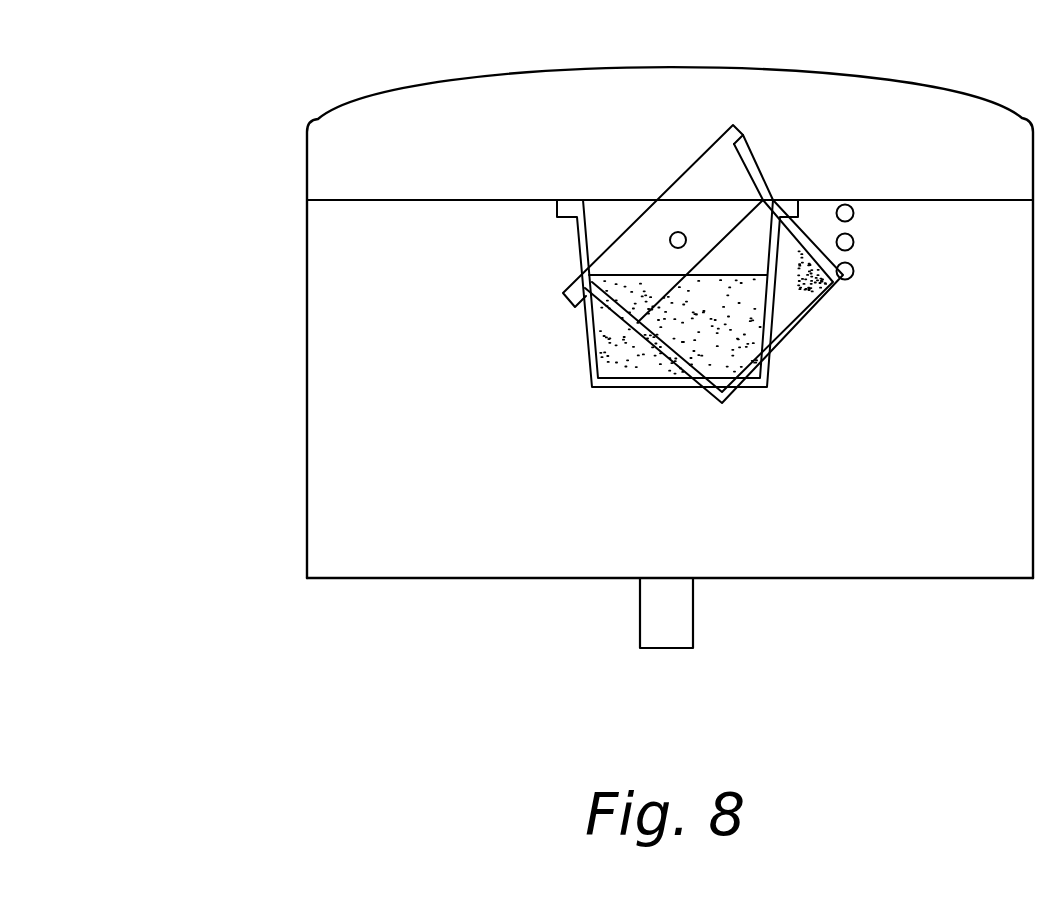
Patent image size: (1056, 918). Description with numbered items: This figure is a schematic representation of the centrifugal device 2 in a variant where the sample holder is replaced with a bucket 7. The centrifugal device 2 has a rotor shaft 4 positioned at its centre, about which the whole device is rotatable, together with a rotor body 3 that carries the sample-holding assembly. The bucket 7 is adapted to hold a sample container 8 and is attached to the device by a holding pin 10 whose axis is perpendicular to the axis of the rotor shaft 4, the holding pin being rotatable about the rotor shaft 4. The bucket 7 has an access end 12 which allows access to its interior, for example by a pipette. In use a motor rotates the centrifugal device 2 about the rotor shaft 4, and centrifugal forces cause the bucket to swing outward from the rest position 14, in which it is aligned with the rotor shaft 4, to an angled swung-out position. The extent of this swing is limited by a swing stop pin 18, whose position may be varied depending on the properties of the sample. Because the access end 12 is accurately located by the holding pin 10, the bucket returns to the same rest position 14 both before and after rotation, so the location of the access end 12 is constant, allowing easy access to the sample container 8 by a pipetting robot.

The centrifugal device 2 is at (265, 300).
The rotor body 3 is at (418, 578).
The rotor shaft 4 is at (668, 623).
The bucket 7 is at (752, 176).
The sample container 8 is at (797, 325).
The holding pin 10 is at (670, 238).
The access end 12 is at (677, 179).
The rest position 14 is at (592, 367).
The swing stop pin 18 is at (853, 268).